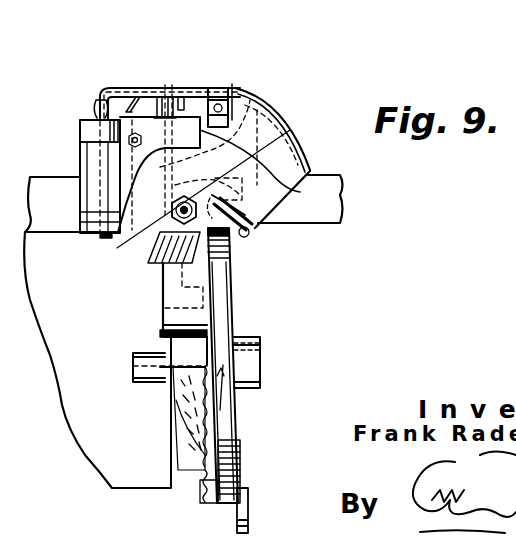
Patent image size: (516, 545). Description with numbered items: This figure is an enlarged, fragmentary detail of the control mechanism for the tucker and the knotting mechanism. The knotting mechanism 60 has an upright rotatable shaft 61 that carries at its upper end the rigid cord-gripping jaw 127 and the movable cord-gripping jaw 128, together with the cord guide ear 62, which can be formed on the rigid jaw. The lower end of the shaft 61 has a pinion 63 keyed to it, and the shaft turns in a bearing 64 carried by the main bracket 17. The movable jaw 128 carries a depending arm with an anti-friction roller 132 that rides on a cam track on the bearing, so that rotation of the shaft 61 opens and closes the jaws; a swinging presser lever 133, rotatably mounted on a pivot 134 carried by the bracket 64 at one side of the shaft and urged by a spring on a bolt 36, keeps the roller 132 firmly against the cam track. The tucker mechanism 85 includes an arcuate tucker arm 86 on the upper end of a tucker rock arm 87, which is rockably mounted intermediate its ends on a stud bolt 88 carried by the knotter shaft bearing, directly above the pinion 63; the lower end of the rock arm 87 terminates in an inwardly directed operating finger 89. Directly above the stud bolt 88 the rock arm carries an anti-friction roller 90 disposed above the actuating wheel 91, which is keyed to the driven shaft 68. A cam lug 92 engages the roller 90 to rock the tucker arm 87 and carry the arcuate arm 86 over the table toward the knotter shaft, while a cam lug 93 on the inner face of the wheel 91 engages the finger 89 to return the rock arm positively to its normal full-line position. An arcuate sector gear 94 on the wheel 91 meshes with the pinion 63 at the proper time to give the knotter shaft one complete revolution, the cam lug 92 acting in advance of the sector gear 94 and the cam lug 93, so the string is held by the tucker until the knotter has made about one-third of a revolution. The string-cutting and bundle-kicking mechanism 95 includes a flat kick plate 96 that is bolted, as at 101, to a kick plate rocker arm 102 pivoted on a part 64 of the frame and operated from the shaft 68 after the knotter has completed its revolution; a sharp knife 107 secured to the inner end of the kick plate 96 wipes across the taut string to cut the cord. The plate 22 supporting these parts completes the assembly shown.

The main bracket 17 is at (97, 332).
The mounting plate 22 is at (209, 174).
The nut 36 is at (133, 147).
The knotting mechanism 60 is at (157, 88).
The rotatable shaft 61 is at (205, 150).
The cord guide ear 62 is at (138, 88).
The pinion 63 is at (148, 263).
The bearing 64 is at (285, 150).
The driven shaft 68 is at (138, 364).
The tucker mechanism 85 is at (289, 117).
The arcuate tucker arm 86 is at (256, 100).
The tucker rock arm 87 is at (268, 218).
The stud bolt 88 is at (172, 193).
The operating finger 89 is at (145, 278).
The anti-friction roller 90 is at (252, 232).
The actuating wheel 91 is at (234, 318).
The cam lug 92 is at (250, 515).
The cam lug 93 is at (188, 398).
The arcuate sector gear 94 is at (205, 470).
The bundle-kicking mechanism 95 is at (216, 88).
The kick plate 96 is at (172, 88).
The bolt 101 is at (271, 145).
The kick plate rocker arm 102 is at (233, 84).
The knife 107 is at (98, 104).
The rigid cord-gripping jaw 127 is at (142, 90).
The movable cord-gripping jaw 128 is at (165, 85).
The anti-friction roller 132 is at (196, 107).
The presser lever 133 is at (80, 142).
The pivot 134 is at (106, 239).